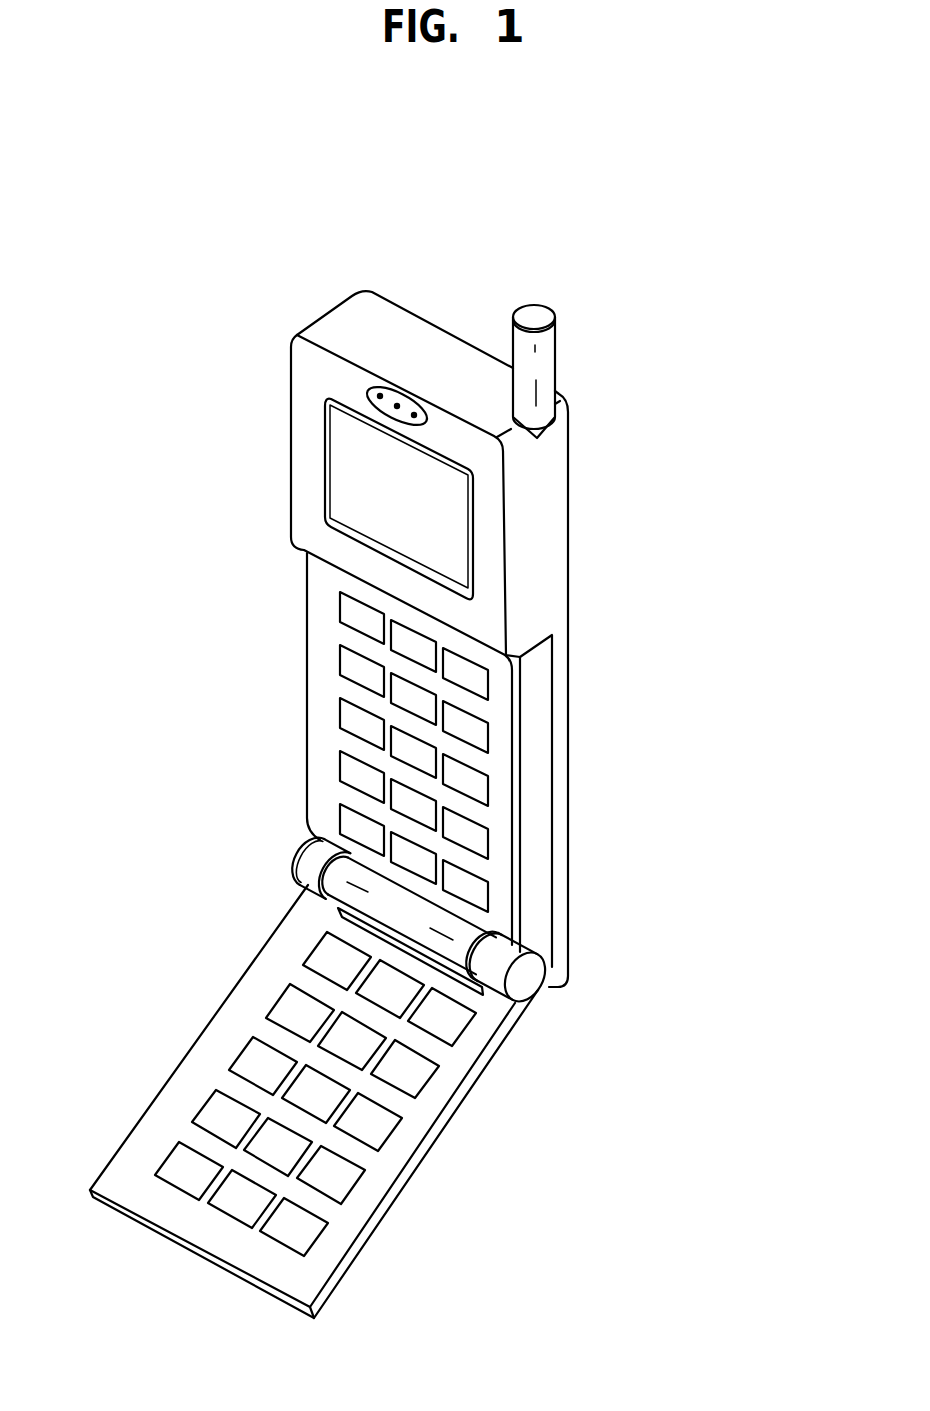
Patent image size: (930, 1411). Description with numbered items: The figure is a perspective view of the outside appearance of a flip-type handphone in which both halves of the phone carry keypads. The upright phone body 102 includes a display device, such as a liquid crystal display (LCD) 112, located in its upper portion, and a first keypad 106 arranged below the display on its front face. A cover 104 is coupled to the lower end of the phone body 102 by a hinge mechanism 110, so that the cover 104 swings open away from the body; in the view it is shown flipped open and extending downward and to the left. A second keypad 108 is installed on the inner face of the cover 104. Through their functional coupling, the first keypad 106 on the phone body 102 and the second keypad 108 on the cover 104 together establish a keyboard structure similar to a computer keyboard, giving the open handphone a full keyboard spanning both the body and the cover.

The phone body 102 is at (307, 687).
The cover 104 is at (193, 1037).
The first keypad 106 is at (337, 740).
The second keypad 108 is at (197, 1102).
The hinge mechanism 110 is at (528, 978).
The liquid crystal display (LCD) 112 is at (338, 466).